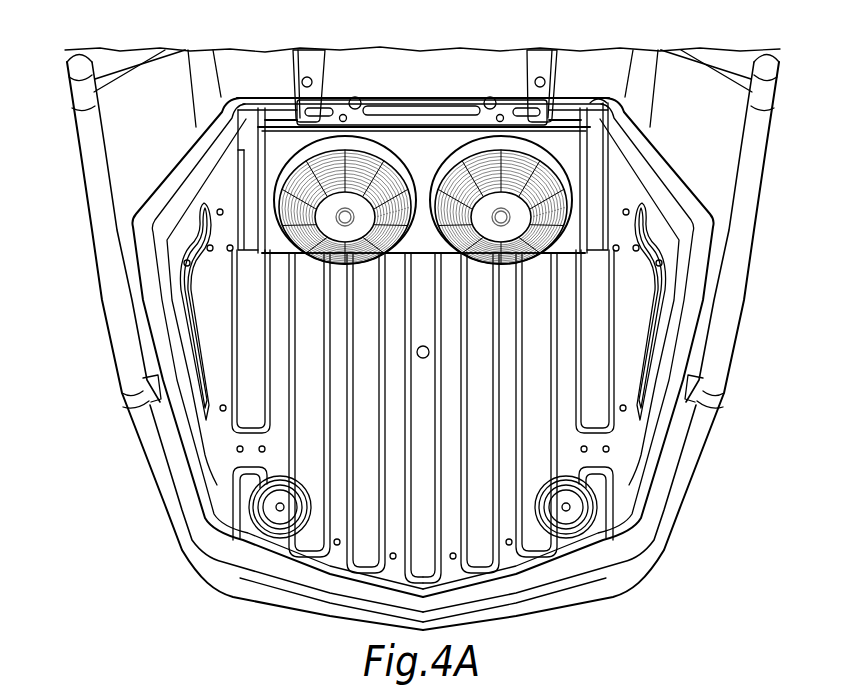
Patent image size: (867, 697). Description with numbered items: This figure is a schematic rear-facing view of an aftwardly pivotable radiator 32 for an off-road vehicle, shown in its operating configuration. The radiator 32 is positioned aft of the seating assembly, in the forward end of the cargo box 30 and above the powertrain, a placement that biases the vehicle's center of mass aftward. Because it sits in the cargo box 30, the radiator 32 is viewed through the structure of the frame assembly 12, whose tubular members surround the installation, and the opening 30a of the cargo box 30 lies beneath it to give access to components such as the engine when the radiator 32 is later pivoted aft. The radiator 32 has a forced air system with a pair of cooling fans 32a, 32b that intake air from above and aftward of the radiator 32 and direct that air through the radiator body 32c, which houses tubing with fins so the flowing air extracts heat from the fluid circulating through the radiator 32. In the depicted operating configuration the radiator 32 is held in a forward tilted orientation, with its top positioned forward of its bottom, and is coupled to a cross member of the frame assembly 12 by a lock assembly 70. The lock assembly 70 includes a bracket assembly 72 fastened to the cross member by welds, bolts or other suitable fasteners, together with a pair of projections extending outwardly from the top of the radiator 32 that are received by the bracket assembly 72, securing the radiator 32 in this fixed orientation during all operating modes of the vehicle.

The frame assembly 12 is at (115, 327).
The cargo box 30 is at (213, 450).
The opening of cargo box 30a is at (235, 152).
The radiator 32 is at (606, 163).
The cooling fan 32a is at (293, 240).
The cooling fan 32b is at (557, 237).
The radiator body 32c is at (277, 140).
The lock assembly 70 is at (518, 66).
The bracket assembly 72 is at (313, 72).